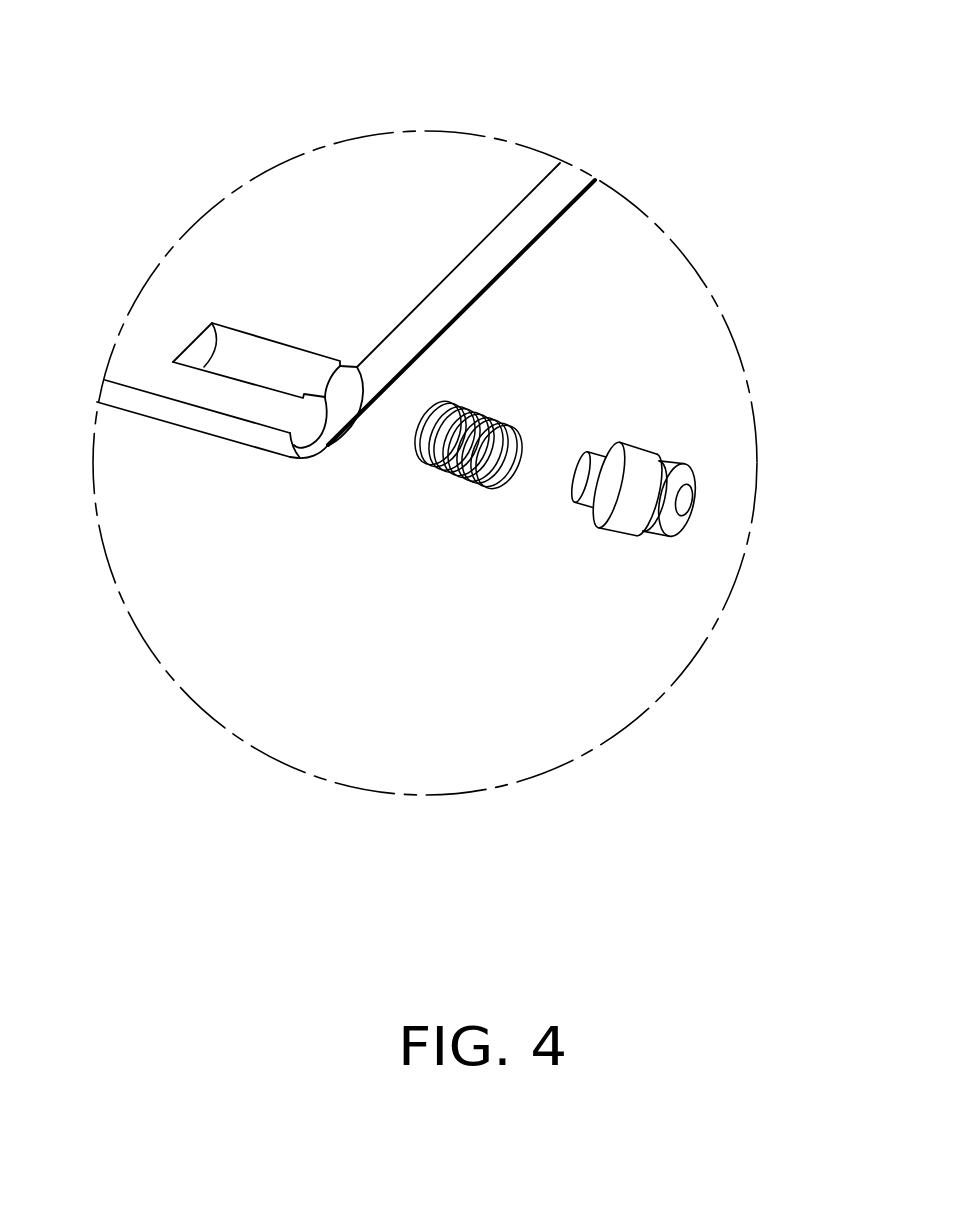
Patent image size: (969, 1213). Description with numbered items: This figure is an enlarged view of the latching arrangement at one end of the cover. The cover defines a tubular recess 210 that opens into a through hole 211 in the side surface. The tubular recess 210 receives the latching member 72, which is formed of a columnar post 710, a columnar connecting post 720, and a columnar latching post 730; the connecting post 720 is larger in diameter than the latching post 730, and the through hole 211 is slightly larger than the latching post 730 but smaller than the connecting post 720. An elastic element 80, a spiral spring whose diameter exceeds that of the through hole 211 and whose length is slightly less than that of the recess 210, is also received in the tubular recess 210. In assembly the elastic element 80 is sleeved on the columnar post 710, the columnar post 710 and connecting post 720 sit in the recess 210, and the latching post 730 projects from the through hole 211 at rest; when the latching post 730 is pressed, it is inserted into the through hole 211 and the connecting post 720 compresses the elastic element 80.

The tubular recess 210 is at (250, 360).
The through hole 211 is at (322, 393).
The elastic element 80 is at (483, 407).
The latching member 72 is at (485, 589).
The columnar post 710 is at (577, 490).
The columnar connecting post 720 is at (605, 508).
The columnar latching post 730 is at (663, 518).